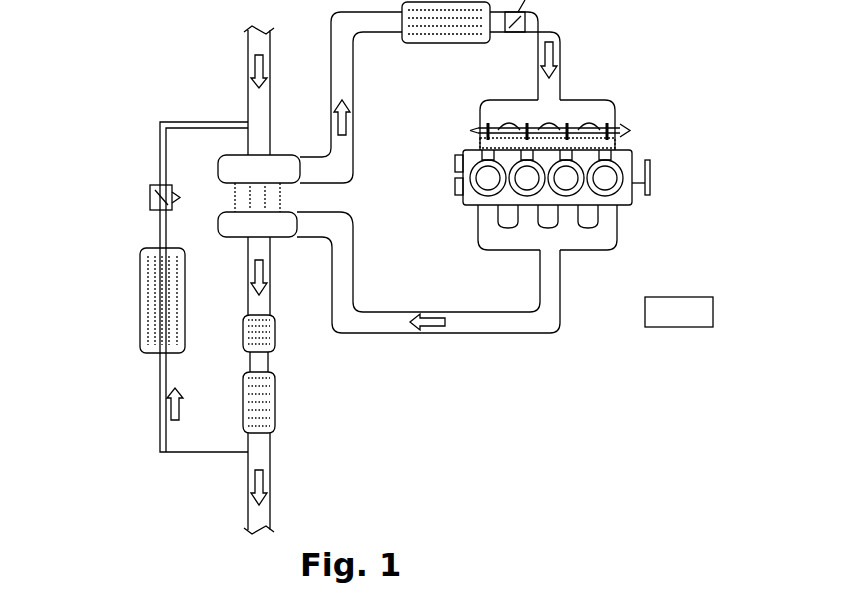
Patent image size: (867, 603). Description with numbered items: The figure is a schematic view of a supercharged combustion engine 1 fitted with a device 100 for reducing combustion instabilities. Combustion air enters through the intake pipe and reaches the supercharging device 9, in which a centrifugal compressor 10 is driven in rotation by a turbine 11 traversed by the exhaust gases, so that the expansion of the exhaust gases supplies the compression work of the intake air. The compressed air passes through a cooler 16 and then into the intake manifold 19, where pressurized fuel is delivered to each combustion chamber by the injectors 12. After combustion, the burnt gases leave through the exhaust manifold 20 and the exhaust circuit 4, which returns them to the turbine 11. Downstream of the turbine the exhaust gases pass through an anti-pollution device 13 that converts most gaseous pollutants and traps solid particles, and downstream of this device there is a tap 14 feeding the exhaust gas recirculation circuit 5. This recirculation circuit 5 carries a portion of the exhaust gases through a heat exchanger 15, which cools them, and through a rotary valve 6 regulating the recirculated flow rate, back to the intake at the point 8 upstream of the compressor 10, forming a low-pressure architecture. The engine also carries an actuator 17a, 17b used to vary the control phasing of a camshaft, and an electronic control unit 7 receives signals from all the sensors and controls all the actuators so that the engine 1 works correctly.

The combustion engine 1 is at (557, 149).
The exhaust circuit 4 is at (380, 350).
The exhaust gas recirculation circuit 5 is at (151, 287).
The valve 6 is at (150, 192).
The electronic control unit 7 is at (680, 296).
The point 8 is at (247, 125).
The supercharging device 9 is at (249, 187).
The centrifugal compressor 10 is at (290, 160).
The turbine 11 is at (268, 230).
The injectors 12 is at (478, 148).
The anti-pollution device 13 is at (278, 390).
The tap 14 is at (250, 452).
The heat exchanger 15 is at (160, 313).
The intercooler 16 is at (465, 45).
The actuator 17a is at (455, 165).
The actuator 17b is at (455, 190).
The intake manifold 19 is at (605, 104).
The exhaust manifold 20 is at (486, 238).
The device 100 is at (537, 395).